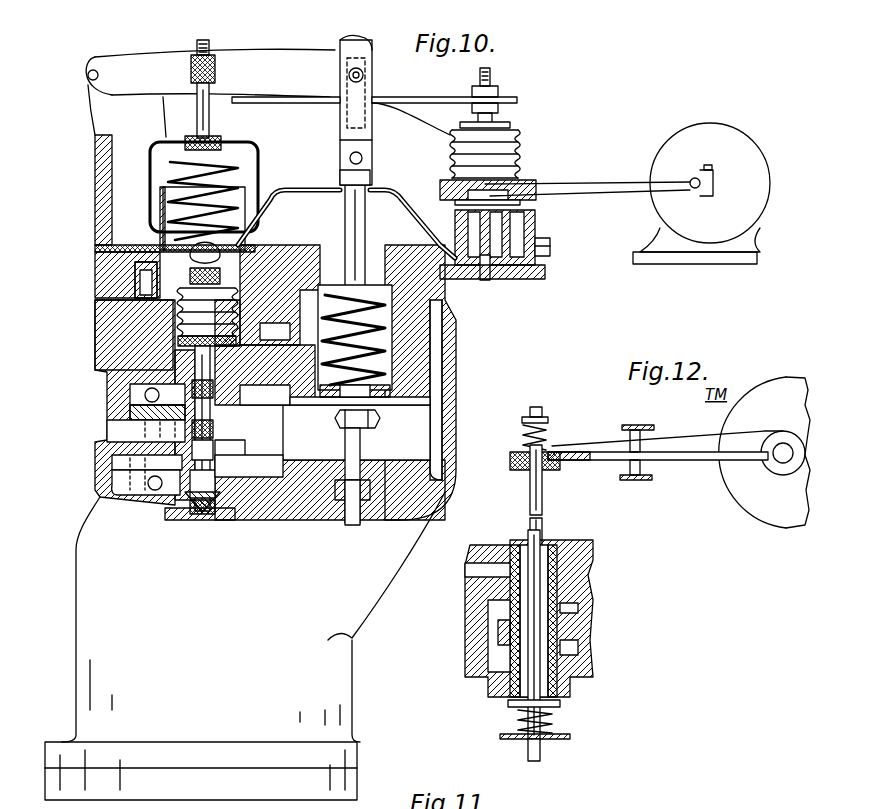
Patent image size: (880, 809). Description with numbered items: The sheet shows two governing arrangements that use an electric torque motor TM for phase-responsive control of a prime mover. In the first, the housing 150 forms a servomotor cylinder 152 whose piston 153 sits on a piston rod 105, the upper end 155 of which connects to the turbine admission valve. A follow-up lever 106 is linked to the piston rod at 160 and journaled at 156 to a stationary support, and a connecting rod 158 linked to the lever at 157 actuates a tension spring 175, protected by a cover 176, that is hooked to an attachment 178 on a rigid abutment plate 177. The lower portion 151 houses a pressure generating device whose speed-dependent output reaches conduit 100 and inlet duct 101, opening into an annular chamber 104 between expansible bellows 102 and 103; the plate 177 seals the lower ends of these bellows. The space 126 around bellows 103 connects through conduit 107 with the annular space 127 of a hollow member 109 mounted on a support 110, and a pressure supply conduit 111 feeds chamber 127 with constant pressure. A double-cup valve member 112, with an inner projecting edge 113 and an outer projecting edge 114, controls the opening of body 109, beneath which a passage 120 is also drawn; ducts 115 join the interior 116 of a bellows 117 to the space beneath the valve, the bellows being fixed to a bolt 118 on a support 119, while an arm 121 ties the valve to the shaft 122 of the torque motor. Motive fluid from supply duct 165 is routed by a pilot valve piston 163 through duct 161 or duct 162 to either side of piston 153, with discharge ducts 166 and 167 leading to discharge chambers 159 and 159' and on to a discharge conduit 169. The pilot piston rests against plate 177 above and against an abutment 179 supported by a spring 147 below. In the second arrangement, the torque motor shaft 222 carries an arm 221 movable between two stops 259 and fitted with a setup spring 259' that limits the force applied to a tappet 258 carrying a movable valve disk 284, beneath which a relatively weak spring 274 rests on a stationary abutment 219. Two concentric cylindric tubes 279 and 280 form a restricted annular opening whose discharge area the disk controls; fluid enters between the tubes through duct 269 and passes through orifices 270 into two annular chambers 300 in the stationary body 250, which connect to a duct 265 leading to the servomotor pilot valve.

In FIG. 10, the conduit 100 is at (150, 533).
In FIG. 10, the inlet duct 101 is at (160, 294).
In FIG. 10, the expansible bellows 102 is at (240, 276).
In FIG. 10, the expansible bellows 103 is at (178, 320).
In FIG. 10, the annular chamber 104 is at (200, 335).
In FIG. 10, the piston rod 105 is at (366, 190).
In FIG. 10, the follow-up lever 106 is at (272, 96).
In FIG. 10, the conduit 107 is at (346, 224).
In FIG. 10, the hollow member 109 is at (535, 280).
In FIG. 10, the support 110 is at (545, 275).
In FIG. 10, the pressure supply conduit 111 is at (553, 246).
In FIG. 10, the valve member 112 is at (440, 192).
In FIG. 10, the inner projecting edge 113 is at (522, 216).
In FIG. 10, the outer projecting edge 114 is at (533, 208).
In FIG. 10, the ducts 115 is at (520, 162).
In FIG. 10, the bellows interior 116 is at (518, 148).
In FIG. 10, the bellows 117 is at (518, 132).
In FIG. 10, the bolt 118 is at (492, 80).
In FIG. 10, the support 119 is at (415, 95).
In FIG. 10, the port 120 is at (485, 265).
In FIG. 10, the arm 121 is at (570, 174).
In FIG. 10, the torque motor shaft 122 is at (693, 188).
In FIG. 10, the space 126 is at (165, 358).
In FIG. 10, the annular space 127 is at (510, 260).
In FIG. 10, the spring 147 is at (185, 520).
In FIG. 10, the housing 150 is at (440, 482).
In FIG. 10, the lower portion 151 is at (86, 605).
In FIG. 10, the servomotor cylinder 152 is at (410, 425).
In FIG. 10, the piston 153 is at (432, 400).
In FIG. 10, the upper end of piston rod 155 is at (340, 48).
In FIG. 10, the journal 156 is at (88, 76).
In FIG. 10, the link 157 is at (215, 74).
In FIG. 10, the connecting rod 158 is at (209, 128).
In FIG. 10, the discharge chamber 159 is at (118, 394).
In FIG. 10, the discharge chamber 159' is at (114, 476).
In FIG. 10, the link 160 is at (366, 72).
In FIG. 10, the duct 161 is at (270, 375).
In FIG. 10, the duct 162 is at (283, 520).
In FIG. 10, the pilot valve piston 163 is at (238, 478).
In FIG. 10, the supply duct 165 is at (108, 432).
In FIG. 10, the discharge duct 166 is at (140, 408).
In FIG. 10, the discharge duct 167 is at (170, 466).
In FIG. 10, the discharge conduit 169 is at (216, 452).
In FIG. 10, the tension spring 175 is at (240, 172).
In FIG. 10, the cover 176 is at (262, 145).
In FIG. 10, the abutment plate 177 is at (212, 340).
In FIG. 10, the attachment 178 is at (186, 258).
In FIG. 10, the abutment 179 is at (215, 516).
In FIG. 12, the stationary abutment 219 is at (572, 738).
In FIG. 12, the torque motor arm 221 is at (653, 434).
In FIG. 12, the torque motor shaft 222 is at (780, 455).
In FIG. 12, the stationary body 250 is at (585, 555).
In FIG. 12, the tappet 258 is at (543, 497).
In FIG. 12, the stops 259 is at (665, 454).
In FIG. 12, the setup spring 259' is at (549, 461).
In FIG. 12, the duct 265 is at (490, 622).
In FIG. 12, the duct 269 is at (470, 570).
In FIG. 12, the orifices 270 is at (578, 606).
In FIG. 12, the spring 274 is at (556, 720).
In FIG. 12, the cylindric tube 279 is at (510, 591).
In FIG. 12, the cylindric tube 280 is at (588, 622).
In FIG. 12, the valve disk 284 is at (560, 704).
In FIG. 12, the annular chambers 300 is at (580, 583).